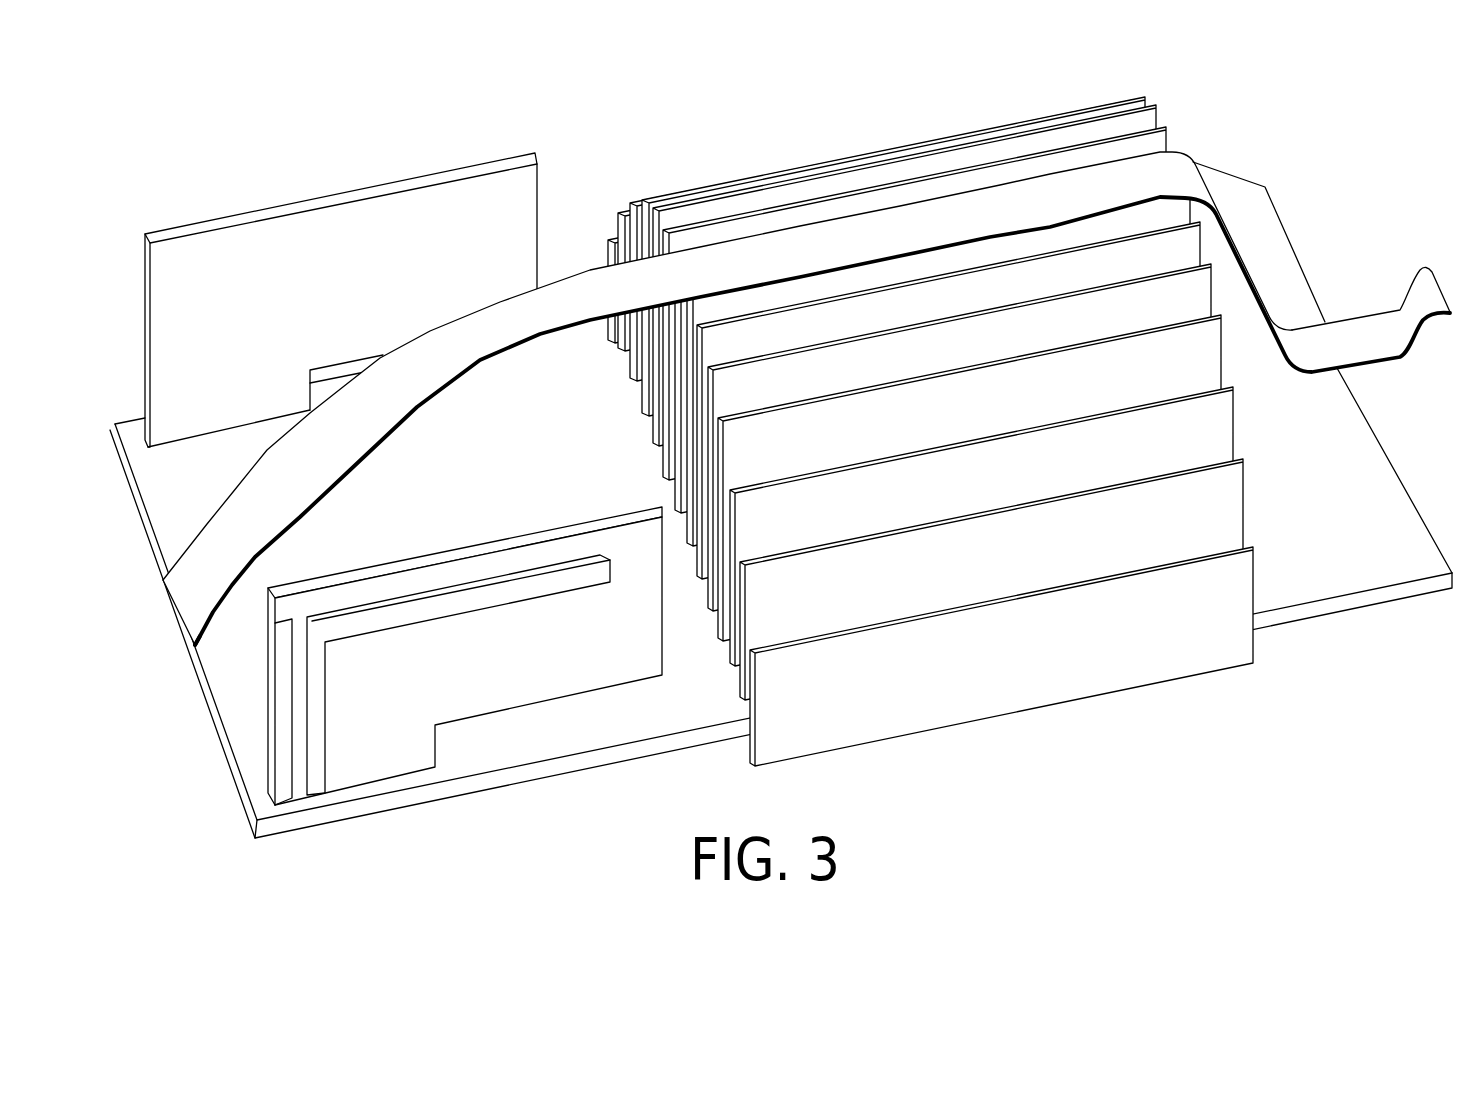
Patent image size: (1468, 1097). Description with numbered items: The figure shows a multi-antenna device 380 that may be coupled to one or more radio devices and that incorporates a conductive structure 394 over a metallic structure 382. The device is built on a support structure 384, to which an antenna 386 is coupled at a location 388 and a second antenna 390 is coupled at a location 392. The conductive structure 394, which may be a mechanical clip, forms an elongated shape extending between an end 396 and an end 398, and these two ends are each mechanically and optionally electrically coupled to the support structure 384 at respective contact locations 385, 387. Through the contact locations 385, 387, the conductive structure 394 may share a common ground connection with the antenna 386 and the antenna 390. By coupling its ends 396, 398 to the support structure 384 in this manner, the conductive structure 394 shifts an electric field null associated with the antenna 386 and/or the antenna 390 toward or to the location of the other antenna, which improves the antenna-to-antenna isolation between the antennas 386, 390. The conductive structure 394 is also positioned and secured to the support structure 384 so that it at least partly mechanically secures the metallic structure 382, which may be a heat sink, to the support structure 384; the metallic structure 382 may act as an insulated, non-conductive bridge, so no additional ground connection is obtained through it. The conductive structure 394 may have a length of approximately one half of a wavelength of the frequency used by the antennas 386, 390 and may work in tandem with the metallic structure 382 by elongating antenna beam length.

The multi-antenna device 380 is at (241, 116).
The metallic structure 382 is at (1082, 113).
The support structure 384 is at (1320, 595).
The contact location 385 is at (1337, 372).
The antenna 386 is at (395, 725).
The contact location 387 is at (195, 645).
The location 388 is at (357, 785).
The antenna 390 is at (165, 316).
The location 392 is at (116, 424).
The conductive structure 394 is at (1323, 337).
The end 396 is at (1363, 310).
The end 398 is at (182, 614).